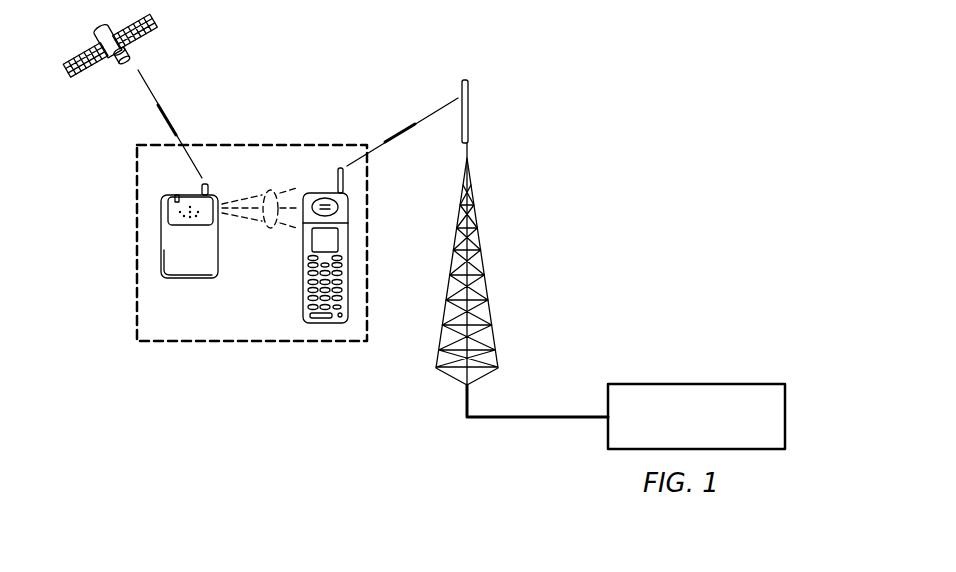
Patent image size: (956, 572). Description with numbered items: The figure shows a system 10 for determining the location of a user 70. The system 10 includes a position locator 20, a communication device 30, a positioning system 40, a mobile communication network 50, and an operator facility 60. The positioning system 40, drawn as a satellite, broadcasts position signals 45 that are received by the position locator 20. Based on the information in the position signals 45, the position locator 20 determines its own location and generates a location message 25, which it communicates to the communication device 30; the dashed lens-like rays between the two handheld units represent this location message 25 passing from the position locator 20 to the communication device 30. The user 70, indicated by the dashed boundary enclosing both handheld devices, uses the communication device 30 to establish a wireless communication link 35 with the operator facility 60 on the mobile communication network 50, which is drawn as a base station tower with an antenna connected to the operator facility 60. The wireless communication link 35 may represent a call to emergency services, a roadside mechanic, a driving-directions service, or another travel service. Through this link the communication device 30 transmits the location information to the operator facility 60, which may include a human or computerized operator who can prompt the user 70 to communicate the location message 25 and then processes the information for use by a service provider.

The system 10 is at (603, 135).
The position locator 20 is at (190, 279).
The location message 25 is at (270, 230).
The communication device 30 is at (302, 306).
The wireless communication link 35 is at (415, 129).
The positioning system 40 is at (90, 36).
The position signals 45 is at (165, 113).
The mobile communication network 50 is at (490, 279).
The operator facility 60 is at (786, 428).
The user 70 is at (127, 212).